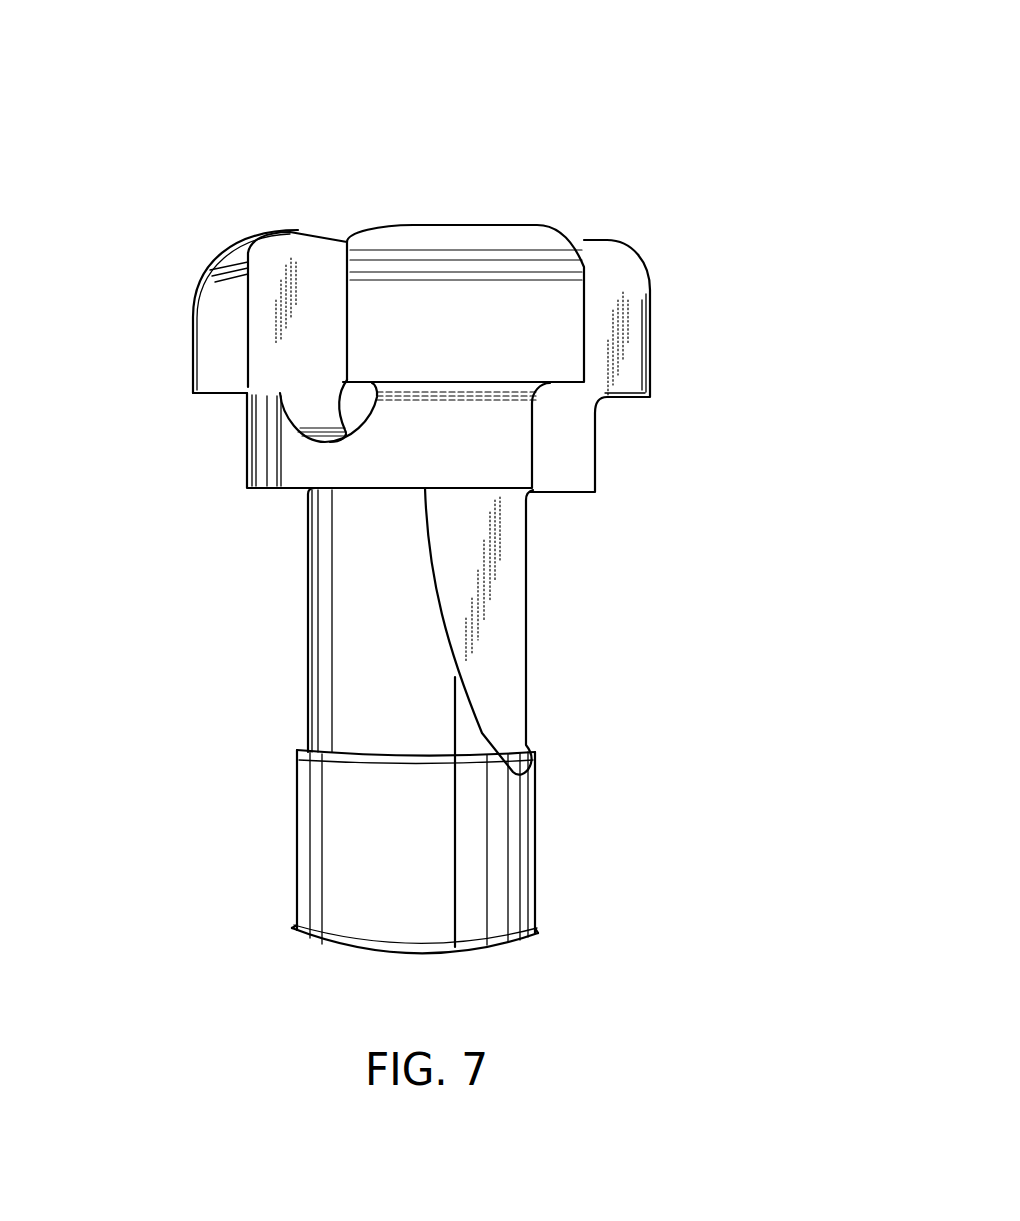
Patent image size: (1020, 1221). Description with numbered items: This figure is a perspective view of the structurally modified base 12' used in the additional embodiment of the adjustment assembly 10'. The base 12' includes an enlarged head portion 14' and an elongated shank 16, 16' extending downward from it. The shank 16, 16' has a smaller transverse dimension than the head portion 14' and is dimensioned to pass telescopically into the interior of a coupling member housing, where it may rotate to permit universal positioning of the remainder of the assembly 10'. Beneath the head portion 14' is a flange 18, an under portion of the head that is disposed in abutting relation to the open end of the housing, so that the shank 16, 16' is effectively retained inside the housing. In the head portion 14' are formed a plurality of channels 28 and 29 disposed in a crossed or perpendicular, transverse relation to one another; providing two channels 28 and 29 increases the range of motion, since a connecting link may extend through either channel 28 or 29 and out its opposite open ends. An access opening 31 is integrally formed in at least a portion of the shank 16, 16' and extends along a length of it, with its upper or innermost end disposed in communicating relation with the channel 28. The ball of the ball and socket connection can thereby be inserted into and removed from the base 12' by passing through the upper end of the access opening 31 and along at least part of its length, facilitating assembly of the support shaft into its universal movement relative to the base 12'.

The adjustment assembly 10' is at (441, 476).
The head portion 14' is at (509, 283).
The channel 28 is at (315, 243).
The channel 29 is at (602, 253).
The flange 18 is at (248, 452).
The base 12' is at (404, 720).
The shank 16 is at (315, 720).
The shank 16' is at (315, 720).
The access opening 31 is at (552, 545).